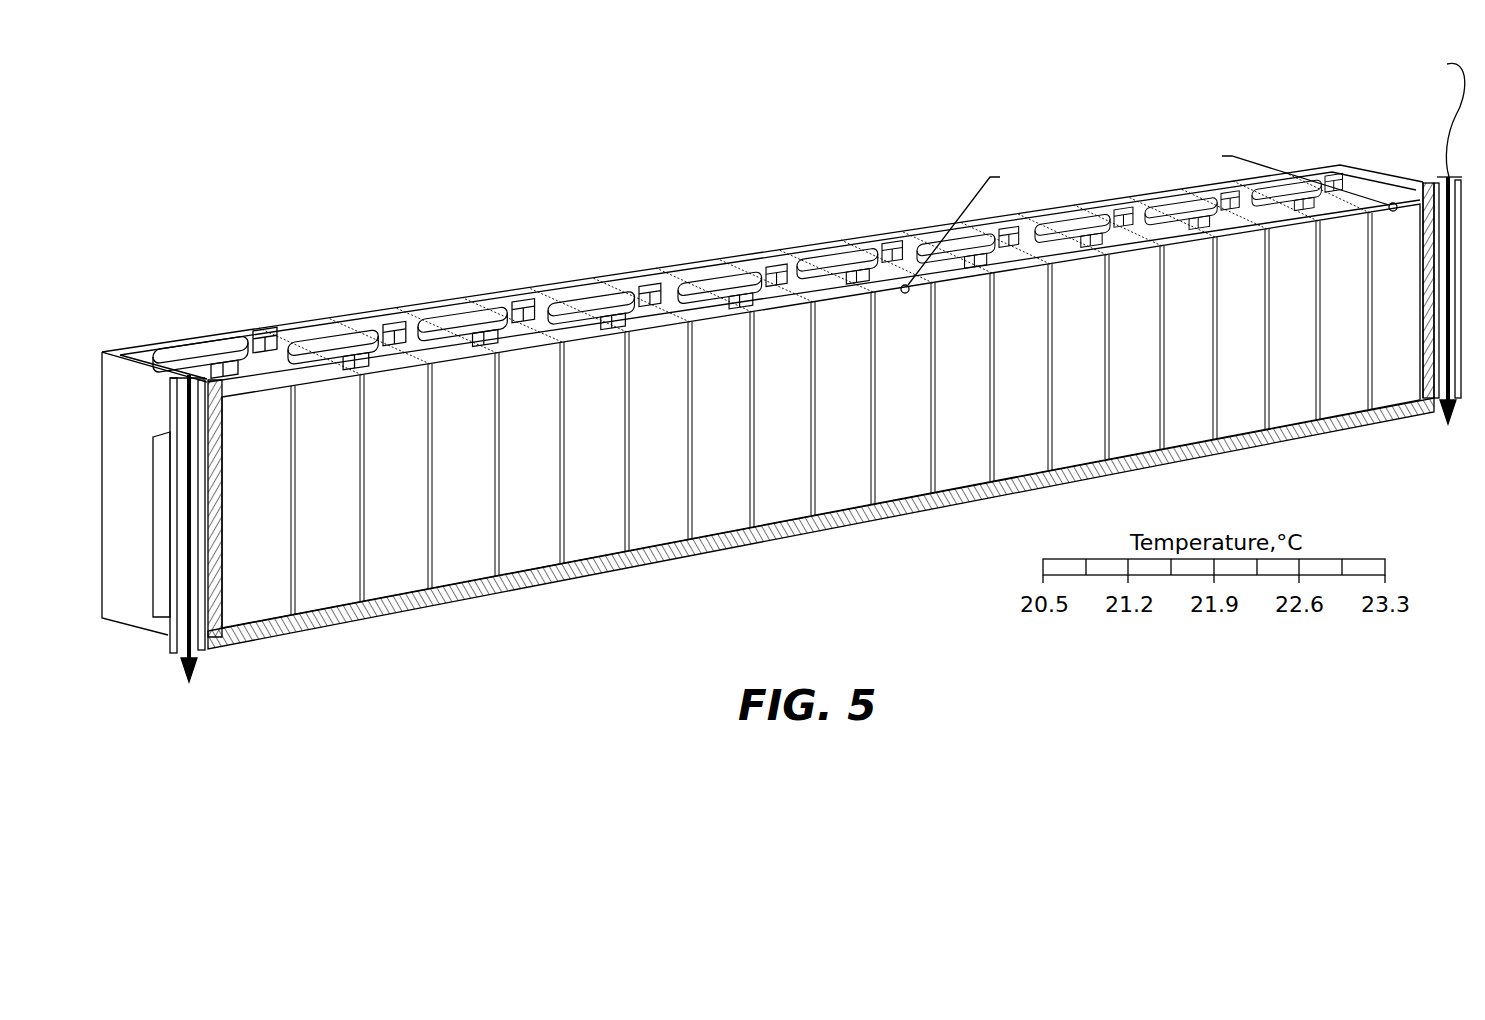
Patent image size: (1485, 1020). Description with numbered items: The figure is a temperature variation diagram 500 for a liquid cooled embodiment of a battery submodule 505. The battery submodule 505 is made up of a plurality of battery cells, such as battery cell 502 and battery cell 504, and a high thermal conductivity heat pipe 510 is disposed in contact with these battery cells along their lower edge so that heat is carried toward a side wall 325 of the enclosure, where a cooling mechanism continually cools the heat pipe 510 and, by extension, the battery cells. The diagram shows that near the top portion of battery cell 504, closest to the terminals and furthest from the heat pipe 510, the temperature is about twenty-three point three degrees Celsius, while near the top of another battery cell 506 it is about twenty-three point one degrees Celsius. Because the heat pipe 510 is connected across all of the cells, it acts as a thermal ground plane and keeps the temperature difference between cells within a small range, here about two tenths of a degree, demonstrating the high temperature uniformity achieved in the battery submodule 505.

The temperature variation diagram 500 is at (235, 75).
The battery submodule 505 is at (622, 226).
The battery cell 502 is at (345, 585).
The battery cell 504 is at (910, 476).
The battery cell 506 is at (1390, 350).
The heat pipe 510 is at (480, 590).
The side wall 325 is at (136, 610).